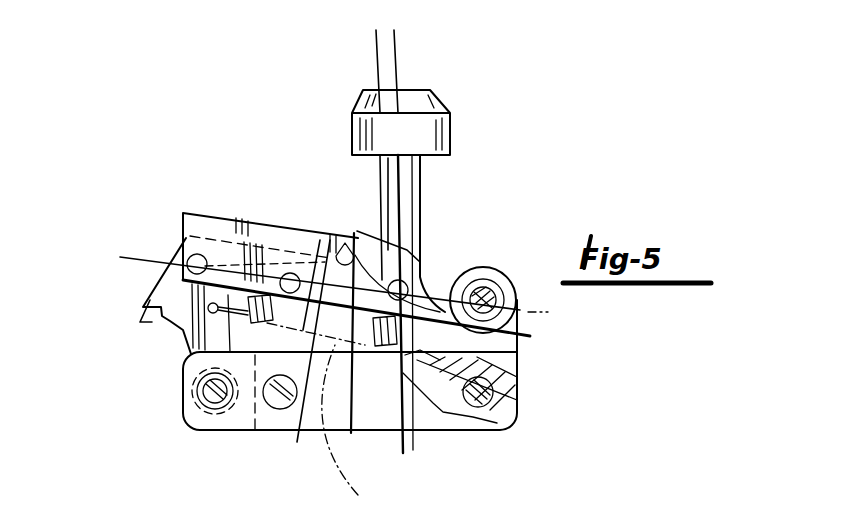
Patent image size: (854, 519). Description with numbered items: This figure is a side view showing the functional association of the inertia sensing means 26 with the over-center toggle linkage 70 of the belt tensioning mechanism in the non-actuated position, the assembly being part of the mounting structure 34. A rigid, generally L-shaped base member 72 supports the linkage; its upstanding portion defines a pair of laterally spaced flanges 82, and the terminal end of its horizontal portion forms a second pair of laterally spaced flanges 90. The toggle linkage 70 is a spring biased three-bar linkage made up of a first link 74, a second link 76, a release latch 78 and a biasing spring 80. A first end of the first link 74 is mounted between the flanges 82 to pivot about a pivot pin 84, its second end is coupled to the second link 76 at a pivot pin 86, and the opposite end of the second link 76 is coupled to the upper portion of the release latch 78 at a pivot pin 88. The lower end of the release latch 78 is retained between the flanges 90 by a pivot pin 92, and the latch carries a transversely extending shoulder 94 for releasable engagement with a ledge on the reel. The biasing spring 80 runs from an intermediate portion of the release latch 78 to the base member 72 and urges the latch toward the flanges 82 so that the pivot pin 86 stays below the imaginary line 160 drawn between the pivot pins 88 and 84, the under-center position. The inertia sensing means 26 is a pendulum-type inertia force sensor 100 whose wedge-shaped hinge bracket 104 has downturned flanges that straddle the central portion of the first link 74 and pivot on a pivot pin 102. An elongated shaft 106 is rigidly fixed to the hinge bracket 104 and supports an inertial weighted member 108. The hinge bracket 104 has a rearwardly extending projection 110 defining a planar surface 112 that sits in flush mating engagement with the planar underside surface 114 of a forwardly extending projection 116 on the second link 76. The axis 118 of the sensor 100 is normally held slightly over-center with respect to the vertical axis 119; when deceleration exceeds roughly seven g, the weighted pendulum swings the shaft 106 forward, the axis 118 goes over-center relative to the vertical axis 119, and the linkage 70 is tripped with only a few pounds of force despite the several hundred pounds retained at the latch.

The inertia sensing means 26 is at (475, 222).
The mounting bracket 34 is at (155, 228).
The over-center toggle linkage 70 is at (218, 222).
The base member 72 is at (430, 420).
The first link 74 is at (437, 278).
The second link 76 is at (281, 235).
The release latch 78 is at (187, 352).
The biasing spring 80 is at (331, 419).
The laterally spaced flanges 82 is at (507, 360).
The pivot pin 84 is at (500, 317).
The pivot pin 86 is at (305, 232).
The pivot pin 88 is at (187, 264).
The laterally spaced flanges 90 is at (240, 430).
The pivot pin 92 is at (190, 407).
The shoulder 94 is at (143, 322).
The inertia force sensor 100 is at (458, 133).
The pivot pin 102 is at (520, 373).
The hinge bracket 104 is at (357, 252).
The shaft 106 is at (375, 226).
The inertial weighted member 108 is at (404, 82).
The rearwardly extending projection 110 is at (352, 433).
The planar surface 112 is at (293, 360).
The planar underside surface 114 is at (402, 217).
The forwardly extending projection 116 is at (350, 243).
The axis of inertia force sensor 118 is at (352, 84).
The vertical axis 119 is at (404, 77).
The imaginary line 160 is at (550, 310).